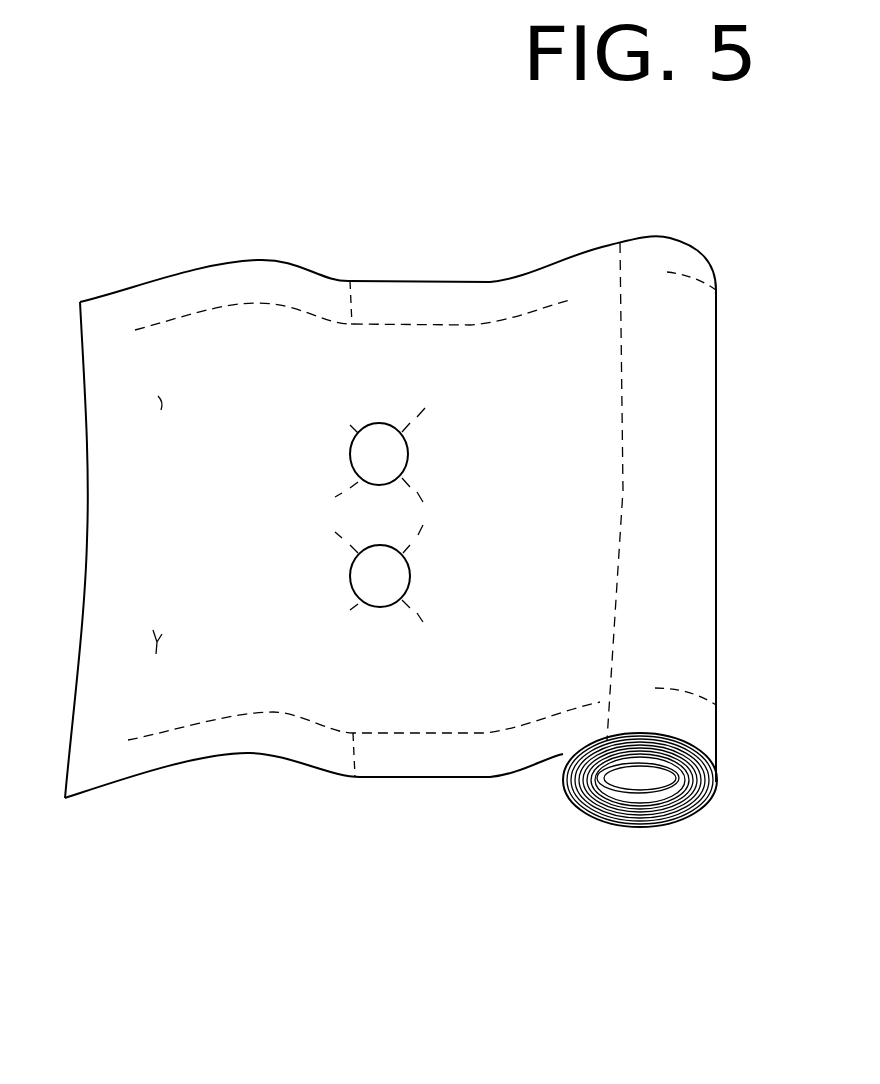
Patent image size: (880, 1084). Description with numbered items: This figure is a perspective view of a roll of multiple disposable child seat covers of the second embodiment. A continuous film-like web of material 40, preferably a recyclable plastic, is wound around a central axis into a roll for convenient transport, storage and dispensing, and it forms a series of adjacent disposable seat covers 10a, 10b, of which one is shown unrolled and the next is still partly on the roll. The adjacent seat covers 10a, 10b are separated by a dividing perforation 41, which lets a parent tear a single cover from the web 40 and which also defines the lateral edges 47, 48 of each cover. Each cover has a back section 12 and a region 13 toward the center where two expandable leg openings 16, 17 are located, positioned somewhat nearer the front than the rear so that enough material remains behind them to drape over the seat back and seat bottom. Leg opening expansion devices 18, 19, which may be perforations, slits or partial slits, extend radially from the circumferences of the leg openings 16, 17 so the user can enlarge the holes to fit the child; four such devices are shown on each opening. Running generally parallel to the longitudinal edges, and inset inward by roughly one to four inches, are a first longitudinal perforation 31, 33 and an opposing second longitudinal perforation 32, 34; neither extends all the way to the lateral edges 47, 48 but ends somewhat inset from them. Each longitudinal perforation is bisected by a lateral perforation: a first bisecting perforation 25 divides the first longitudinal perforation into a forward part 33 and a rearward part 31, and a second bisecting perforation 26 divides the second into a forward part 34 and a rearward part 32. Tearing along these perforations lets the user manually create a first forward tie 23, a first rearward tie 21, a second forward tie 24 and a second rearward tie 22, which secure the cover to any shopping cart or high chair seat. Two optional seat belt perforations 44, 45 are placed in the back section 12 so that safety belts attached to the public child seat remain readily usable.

The disposable seat cover 10a is at (311, 181).
The disposable seat cover 10b is at (652, 201).
The back section 12 is at (136, 528).
The central region 13 is at (541, 498).
The leg opening 16 is at (410, 577).
The leg opening 17 is at (408, 452).
The leg opening expansion device 18 is at (344, 610).
The leg opening expansion device 19 is at (343, 418).
The first rearward tie 21 is at (260, 285).
The second rearward tie 22 is at (293, 747).
The first forward tie 23 is at (428, 297).
The second forward tie 24 is at (425, 767).
The first bisecting perforation 25 is at (356, 295).
The second bisecting perforation 26 is at (353, 733).
The first longitudinal perforation (rearward part) 31 is at (217, 312).
The second longitudinal perforation (rearward part) 32 is at (273, 712).
The first longitudinal perforation (forward part) 33 is at (472, 320).
The second longitudinal perforation (forward part) 34 is at (485, 733).
The continuous web of material 40 is at (618, 823).
The dividing perforation 41 is at (623, 487).
The seat belt perforation 44 is at (160, 405).
The seat belt perforation 45 is at (160, 637).
The lateral edge 47 is at (75, 732).
The lateral edge 48 is at (600, 713).